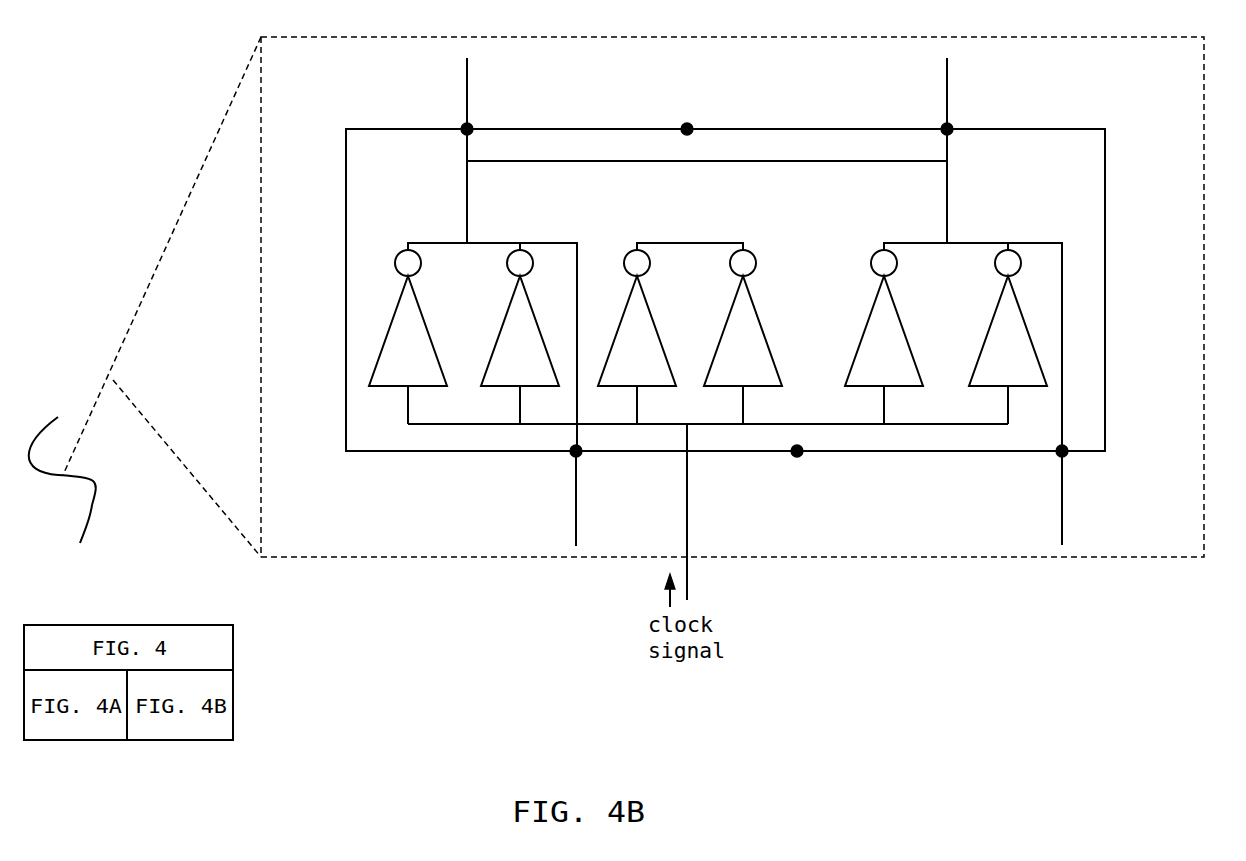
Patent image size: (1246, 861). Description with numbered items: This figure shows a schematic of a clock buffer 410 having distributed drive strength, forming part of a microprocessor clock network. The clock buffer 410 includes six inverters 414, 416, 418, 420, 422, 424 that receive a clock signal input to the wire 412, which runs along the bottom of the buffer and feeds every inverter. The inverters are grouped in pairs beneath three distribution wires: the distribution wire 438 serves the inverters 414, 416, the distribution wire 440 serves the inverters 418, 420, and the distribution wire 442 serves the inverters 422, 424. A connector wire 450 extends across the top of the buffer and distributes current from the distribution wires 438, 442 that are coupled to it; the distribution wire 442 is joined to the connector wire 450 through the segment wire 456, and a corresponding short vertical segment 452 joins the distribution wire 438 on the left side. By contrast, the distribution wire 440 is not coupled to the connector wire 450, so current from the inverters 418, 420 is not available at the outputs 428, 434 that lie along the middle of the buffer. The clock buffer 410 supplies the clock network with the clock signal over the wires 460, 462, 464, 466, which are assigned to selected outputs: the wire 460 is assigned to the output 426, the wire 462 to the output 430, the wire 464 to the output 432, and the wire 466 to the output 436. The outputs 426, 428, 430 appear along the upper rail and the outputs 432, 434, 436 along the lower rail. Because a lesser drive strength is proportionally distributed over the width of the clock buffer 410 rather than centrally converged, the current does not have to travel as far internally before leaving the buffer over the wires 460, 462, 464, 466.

The clock buffer 410 is at (1093, 171).
The wire 412 is at (463, 427).
The inverter 414 is at (427, 377).
The inverter 416 is at (539, 377).
The inverter 418 is at (656, 377).
The inverter 420 is at (762, 377).
The inverter 422 is at (903, 377).
The inverter 424 is at (1027, 377).
The output 426 is at (470, 128).
The output 428 is at (690, 128).
The output 430 is at (953, 127).
The output 432 is at (572, 455).
The output 434 is at (793, 457).
The output 436 is at (1057, 460).
The distribution wire 438 is at (488, 238).
The distribution wire 440 is at (717, 243).
The distribution wire 442 is at (983, 240).
The connector wire 450 is at (770, 158).
The vertical line 452 is at (468, 185).
The segment wire 456 is at (947, 186).
The wire 460 is at (468, 102).
The wire 462 is at (949, 98).
The wire 464 is at (573, 480).
The wire 466 is at (1060, 483).